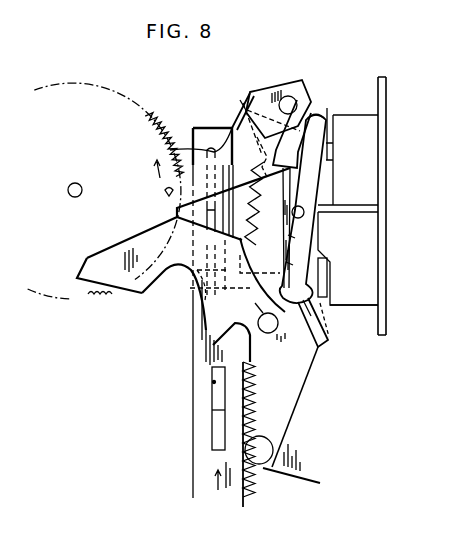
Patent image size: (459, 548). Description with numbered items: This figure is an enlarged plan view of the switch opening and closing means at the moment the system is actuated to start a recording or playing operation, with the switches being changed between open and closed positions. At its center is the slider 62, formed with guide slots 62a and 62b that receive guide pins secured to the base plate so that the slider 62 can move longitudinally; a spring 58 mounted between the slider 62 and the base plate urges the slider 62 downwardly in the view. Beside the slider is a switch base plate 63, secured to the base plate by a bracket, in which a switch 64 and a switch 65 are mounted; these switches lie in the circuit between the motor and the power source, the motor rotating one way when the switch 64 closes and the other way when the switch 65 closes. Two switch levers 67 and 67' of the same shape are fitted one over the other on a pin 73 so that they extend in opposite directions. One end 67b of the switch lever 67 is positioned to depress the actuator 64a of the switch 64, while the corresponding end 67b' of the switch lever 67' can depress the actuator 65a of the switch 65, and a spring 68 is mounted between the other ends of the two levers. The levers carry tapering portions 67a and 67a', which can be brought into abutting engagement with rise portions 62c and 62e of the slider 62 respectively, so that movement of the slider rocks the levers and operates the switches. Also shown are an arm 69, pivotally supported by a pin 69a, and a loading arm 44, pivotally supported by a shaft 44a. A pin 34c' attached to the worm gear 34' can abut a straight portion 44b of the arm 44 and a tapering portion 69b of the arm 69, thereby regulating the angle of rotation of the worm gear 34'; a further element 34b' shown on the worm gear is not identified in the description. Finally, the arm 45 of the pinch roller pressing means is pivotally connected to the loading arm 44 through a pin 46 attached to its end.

The worm gear 34' is at (103, 178).
The gear pin 34b' is at (48, 183).
The pin 34c' is at (145, 198).
The loading arm 44 is at (322, 351).
The shaft 44a is at (269, 333).
The straight portion 44b is at (80, 282).
The arm 45 is at (319, 456).
The pin 46 is at (272, 445).
The spring 58 is at (260, 395).
The slider 62 is at (193, 458).
The guide slot 62a is at (212, 382).
The guide slot 62b is at (193, 148).
The rise portion 62c is at (232, 128).
The rise portion 62e is at (190, 288).
The switch base plate 63 is at (388, 93).
The switch 64 is at (365, 127).
The actuator 64a is at (333, 108).
The switch 65 is at (368, 306).
The actuator 65a is at (327, 283).
The switch lever 67 is at (318, 209).
The switch lever 67' is at (277, 286).
The tapering portion 67a is at (199, 335).
The tapering portion 67a' is at (261, 179).
The end of switch lever 67b is at (326, 102).
The end of switch lever 67b' is at (335, 328).
The spring 68 is at (260, 218).
The arm 69 is at (267, 92).
The pin 69a is at (289, 96).
The tapering portion 69b is at (163, 150).
The pin 73 is at (304, 222).